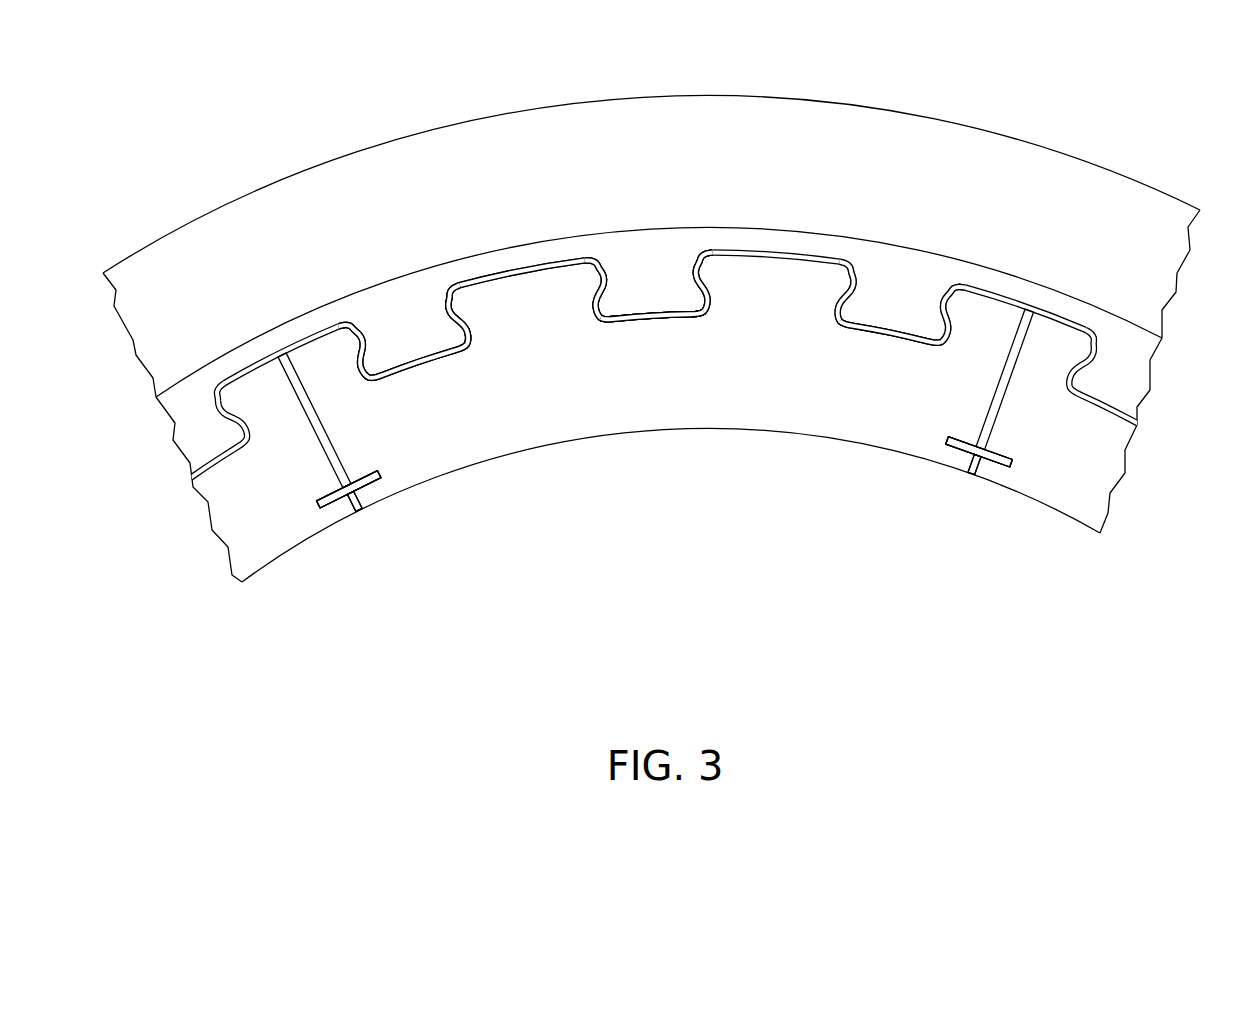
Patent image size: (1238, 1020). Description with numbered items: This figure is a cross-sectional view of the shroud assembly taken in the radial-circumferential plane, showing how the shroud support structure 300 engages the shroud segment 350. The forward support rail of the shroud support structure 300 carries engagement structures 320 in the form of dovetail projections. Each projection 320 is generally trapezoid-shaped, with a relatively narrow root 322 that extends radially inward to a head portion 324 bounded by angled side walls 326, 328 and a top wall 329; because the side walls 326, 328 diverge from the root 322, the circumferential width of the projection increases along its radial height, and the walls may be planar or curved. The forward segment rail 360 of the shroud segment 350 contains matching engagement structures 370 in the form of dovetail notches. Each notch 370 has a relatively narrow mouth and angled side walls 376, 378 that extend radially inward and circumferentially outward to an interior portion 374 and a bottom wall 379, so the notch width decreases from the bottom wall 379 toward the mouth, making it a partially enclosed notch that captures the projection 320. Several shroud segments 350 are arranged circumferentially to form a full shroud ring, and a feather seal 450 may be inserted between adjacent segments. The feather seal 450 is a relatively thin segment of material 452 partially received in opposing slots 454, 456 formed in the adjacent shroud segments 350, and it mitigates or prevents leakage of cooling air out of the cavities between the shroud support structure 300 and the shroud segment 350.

The shroud support structure 300 is at (651, 242).
The engagement structures 320 is at (648, 301).
The root 322 is at (383, 323).
The head portion 324 is at (428, 340).
The side wall 326 is at (355, 355).
The side wall 328 is at (457, 292).
The top wall 329 is at (417, 362).
The shroud segment 350 is at (671, 544).
The forward segment rail 360 is at (772, 358).
The engagement structures 370 is at (883, 338).
The interior portion 374 is at (637, 317).
The side wall 376 is at (593, 290).
The side wall 378 is at (717, 283).
The bottom wall 379 is at (653, 315).
The feather seal 450 is at (656, 463).
The segment of material 452 is at (345, 520).
The slot 454 is at (325, 497).
The slot 456 is at (360, 480).